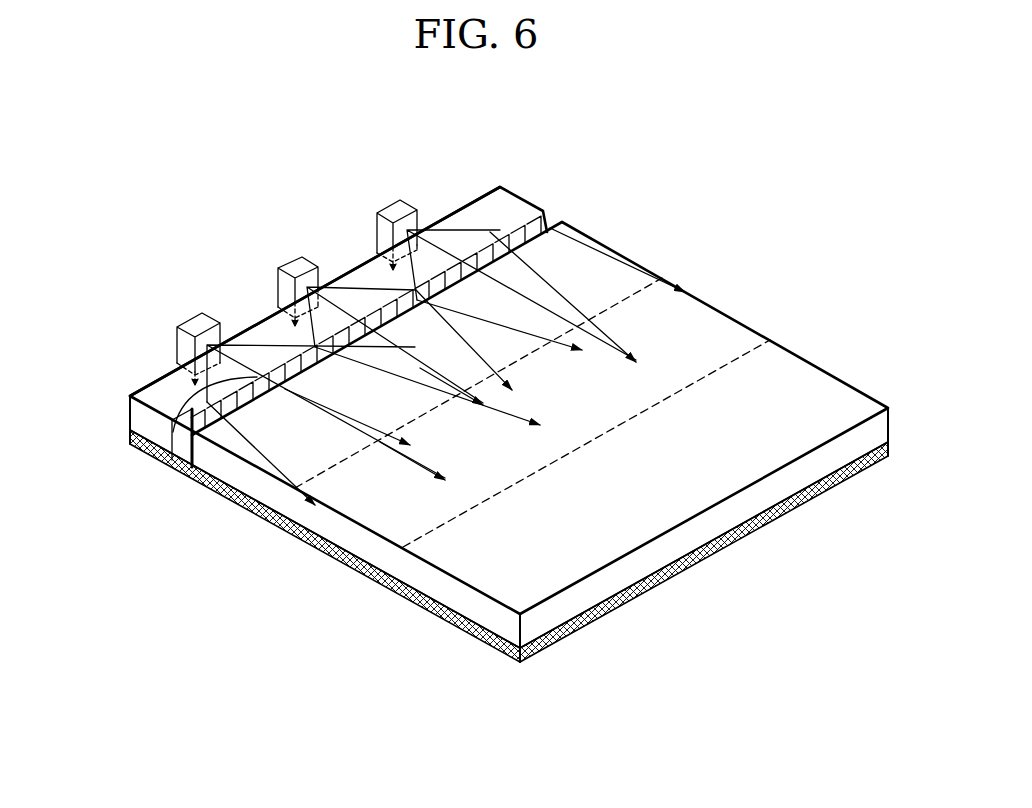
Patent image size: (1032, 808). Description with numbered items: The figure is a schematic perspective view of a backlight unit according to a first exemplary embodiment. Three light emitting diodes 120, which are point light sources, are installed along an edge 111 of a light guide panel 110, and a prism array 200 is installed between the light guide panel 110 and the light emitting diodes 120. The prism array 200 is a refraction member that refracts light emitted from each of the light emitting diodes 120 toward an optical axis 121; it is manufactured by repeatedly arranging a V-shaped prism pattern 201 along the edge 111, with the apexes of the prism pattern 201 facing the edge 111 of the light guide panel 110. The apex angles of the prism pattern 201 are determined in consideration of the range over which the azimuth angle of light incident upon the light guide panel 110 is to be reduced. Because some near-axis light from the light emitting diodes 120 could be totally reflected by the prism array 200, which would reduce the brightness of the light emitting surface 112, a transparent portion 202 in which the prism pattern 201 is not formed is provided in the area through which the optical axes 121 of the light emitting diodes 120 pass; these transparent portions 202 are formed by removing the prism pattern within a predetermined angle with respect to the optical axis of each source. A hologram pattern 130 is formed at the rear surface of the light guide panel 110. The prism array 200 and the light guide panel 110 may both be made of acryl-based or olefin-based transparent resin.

The light guide panel 110 is at (853, 364).
The edge 111 is at (452, 256).
The light emitting surface 112 is at (718, 337).
The light emitting diodes 120 is at (376, 207).
The optical axes 121 is at (402, 462).
The hologram pattern 130 is at (276, 530).
The prism array 200 is at (108, 414).
The prism pattern 201 is at (186, 440).
The transparent portion 202 is at (190, 449).